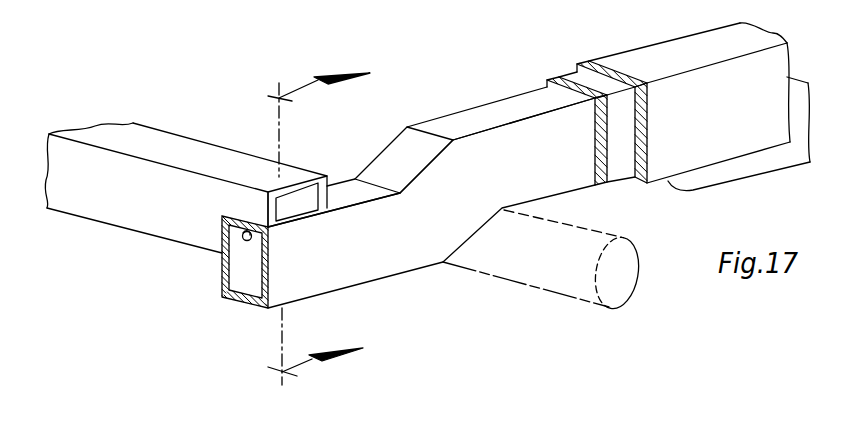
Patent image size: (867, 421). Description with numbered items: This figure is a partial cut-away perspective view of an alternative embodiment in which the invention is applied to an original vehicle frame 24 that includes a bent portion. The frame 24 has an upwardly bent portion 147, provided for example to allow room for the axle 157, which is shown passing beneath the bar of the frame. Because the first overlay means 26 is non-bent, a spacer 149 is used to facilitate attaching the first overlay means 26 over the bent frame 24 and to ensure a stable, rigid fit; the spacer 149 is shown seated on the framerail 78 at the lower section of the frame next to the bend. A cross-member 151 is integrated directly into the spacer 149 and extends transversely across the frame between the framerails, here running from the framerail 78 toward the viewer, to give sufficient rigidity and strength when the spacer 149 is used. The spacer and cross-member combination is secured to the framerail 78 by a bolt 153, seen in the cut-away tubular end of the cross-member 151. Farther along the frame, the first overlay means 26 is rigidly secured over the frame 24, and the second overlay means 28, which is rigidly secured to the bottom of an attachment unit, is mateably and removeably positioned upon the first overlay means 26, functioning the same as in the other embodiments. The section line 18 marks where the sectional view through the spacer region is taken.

The section line 18- 18 is at (319, 224).
The original frame 24 is at (414, 276).
The first overlay means 26 is at (622, 162).
The second overlay means 28 is at (668, 143).
The framerail 78 is at (345, 279).
The upwardly bent portion 147 is at (451, 199).
The spacer 149 is at (293, 188).
The cross-member 151 is at (143, 137).
The bolt 153 is at (251, 241).
The axle 157 is at (586, 304).